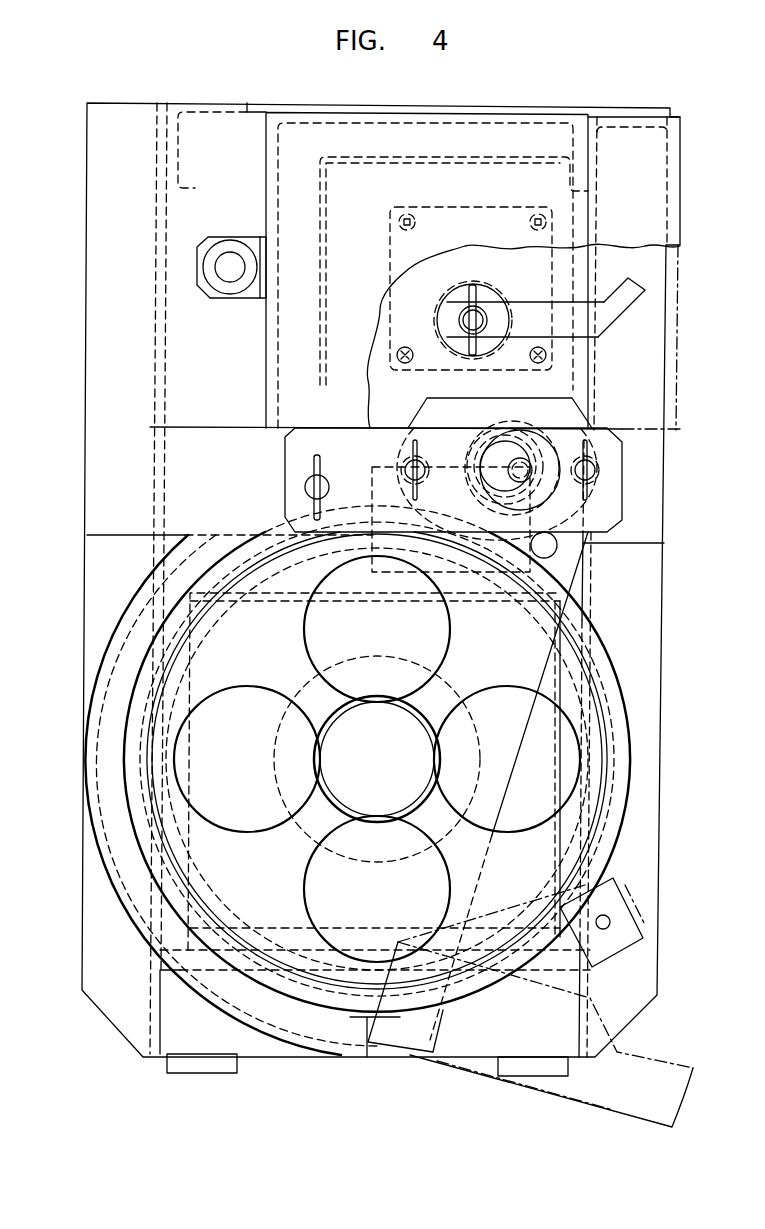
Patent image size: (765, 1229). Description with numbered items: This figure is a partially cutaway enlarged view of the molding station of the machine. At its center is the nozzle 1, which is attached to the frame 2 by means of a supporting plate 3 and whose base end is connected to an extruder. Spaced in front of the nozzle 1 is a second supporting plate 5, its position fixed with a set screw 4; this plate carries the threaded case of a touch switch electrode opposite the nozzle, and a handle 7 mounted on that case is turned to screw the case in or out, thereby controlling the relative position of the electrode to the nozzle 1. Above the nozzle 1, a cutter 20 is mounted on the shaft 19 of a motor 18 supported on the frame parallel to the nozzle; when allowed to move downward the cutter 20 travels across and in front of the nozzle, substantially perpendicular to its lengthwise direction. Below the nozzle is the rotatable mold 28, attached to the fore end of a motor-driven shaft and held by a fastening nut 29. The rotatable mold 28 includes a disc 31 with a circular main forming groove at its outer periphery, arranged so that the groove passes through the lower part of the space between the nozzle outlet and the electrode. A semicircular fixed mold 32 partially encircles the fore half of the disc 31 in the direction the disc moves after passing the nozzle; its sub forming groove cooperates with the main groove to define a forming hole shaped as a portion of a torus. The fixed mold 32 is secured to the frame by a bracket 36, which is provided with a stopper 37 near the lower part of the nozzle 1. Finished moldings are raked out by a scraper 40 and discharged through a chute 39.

The nozzle 1 is at (478, 452).
The frame 2 is at (155, 455).
The supporting plate 3 is at (87, 386).
The set screw 4 is at (315, 484).
The supporting plate 5 is at (607, 508).
The handle 7 is at (548, 455).
The motor 18 is at (422, 358).
The shaft 19 is at (462, 300).
The cutter 20 is at (612, 308).
The rotatable mold 28 is at (625, 682).
The fastening nut 29 is at (418, 710).
The disc 31 is at (220, 640).
The fixed mold 32 is at (92, 744).
The bracket 36 is at (572, 572).
The stopper 37 is at (557, 548).
The chute 39 is at (672, 1075).
The scraper 40 is at (645, 926).